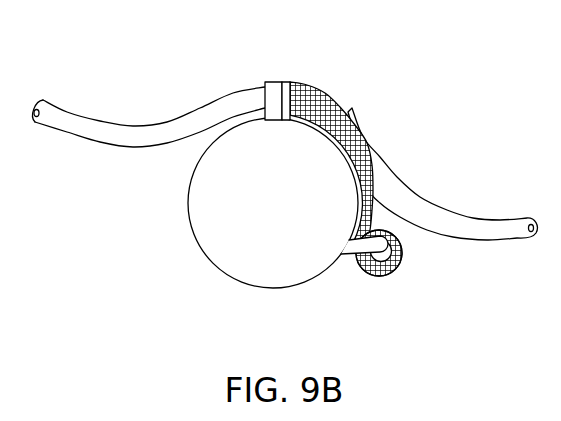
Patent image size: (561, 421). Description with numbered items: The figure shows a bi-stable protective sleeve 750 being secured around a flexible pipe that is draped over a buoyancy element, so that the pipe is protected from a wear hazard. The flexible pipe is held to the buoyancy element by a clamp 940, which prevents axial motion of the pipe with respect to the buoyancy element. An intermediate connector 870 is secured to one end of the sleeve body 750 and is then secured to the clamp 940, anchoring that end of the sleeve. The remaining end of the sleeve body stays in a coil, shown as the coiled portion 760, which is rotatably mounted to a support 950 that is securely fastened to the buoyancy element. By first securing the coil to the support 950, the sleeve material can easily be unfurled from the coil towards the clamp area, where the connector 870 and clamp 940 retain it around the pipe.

The clamp 940 is at (272, 92).
The intermediate connector 870 is at (287, 84).
The protective sleeve 750 is at (363, 133).
The ring 760 is at (401, 265).
The support 950 is at (364, 252).